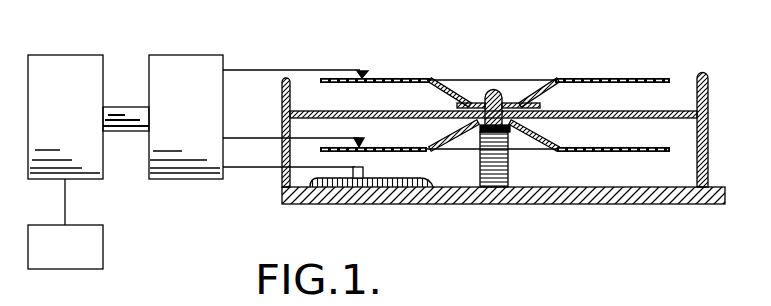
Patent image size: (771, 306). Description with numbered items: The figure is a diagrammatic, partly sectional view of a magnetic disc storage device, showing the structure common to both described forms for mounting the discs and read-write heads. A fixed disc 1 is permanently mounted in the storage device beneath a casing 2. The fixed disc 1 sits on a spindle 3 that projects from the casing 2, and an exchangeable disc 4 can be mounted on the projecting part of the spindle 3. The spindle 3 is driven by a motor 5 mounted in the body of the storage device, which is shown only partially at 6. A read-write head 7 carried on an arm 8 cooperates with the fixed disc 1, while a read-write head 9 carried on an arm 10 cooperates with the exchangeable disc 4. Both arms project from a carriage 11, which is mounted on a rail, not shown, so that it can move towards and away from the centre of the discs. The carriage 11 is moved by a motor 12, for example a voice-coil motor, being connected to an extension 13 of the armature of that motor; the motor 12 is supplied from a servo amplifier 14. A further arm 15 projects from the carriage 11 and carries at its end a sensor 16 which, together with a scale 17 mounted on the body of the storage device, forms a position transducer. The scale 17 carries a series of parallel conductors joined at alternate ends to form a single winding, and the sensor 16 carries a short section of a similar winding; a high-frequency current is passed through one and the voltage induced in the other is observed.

The fixed disc 1 is at (632, 153).
The casing 2 is at (708, 86).
The spindle 3 is at (495, 90).
The exchangeable disc 4 is at (642, 80).
The motor 5 is at (510, 170).
The body of the storage device 6 is at (681, 213).
The read-write head 7 is at (363, 143).
The arm 8 is at (258, 136).
The read-write head 9 is at (370, 76).
The arm 10 is at (268, 68).
The carriage 11 is at (205, 63).
The motor 12 is at (83, 65).
The extension 13 is at (125, 113).
The servo amplifier 14 is at (100, 245).
The further arm 15 is at (262, 170).
The sensor 16 is at (364, 173).
The scale 17 is at (440, 203).